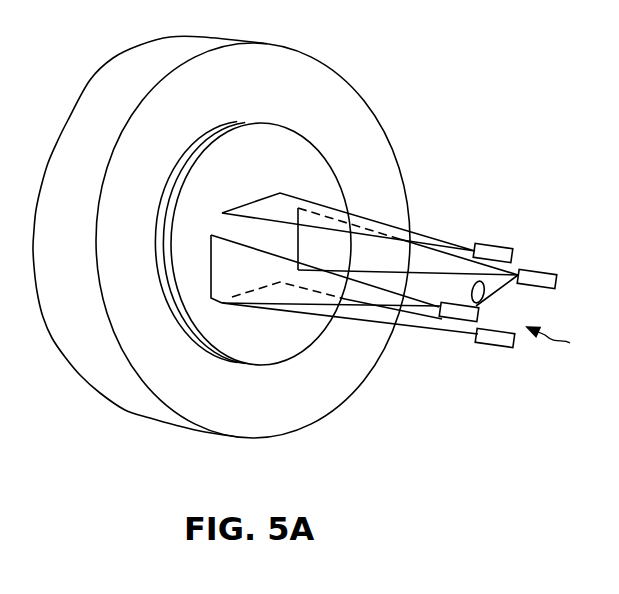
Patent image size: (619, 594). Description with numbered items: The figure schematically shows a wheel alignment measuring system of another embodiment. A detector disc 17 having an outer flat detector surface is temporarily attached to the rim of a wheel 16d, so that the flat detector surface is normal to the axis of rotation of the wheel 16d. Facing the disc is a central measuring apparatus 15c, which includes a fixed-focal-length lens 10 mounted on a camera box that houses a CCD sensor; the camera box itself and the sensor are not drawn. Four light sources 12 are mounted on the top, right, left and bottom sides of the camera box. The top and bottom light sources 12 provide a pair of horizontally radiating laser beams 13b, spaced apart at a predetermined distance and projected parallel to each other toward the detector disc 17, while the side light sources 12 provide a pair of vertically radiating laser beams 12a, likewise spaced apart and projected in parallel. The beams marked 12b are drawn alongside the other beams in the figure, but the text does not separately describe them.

The wheel 16d is at (320, 78).
The detector disc 17 is at (193, 157).
The horizontally radiating laser beam 13b is at (263, 207).
The light beam 12b is at (360, 217).
The vertically radiating laser beam 12a is at (437, 263).
The light source 12 is at (498, 242).
The fixed-focal-length lens 10 is at (496, 287).
The central measuring apparatus 15c is at (567, 341).